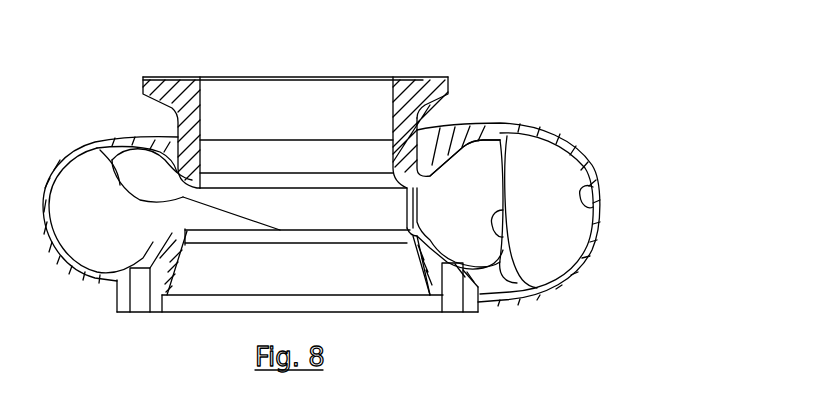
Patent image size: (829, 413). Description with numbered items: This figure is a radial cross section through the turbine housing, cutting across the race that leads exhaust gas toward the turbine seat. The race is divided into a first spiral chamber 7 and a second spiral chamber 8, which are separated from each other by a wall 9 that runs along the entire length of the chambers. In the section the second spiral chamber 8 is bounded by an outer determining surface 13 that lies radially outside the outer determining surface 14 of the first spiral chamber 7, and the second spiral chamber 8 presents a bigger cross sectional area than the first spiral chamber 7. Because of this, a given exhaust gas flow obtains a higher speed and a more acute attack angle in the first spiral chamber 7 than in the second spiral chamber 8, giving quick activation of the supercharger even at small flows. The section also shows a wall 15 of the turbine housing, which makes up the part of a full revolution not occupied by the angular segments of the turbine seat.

The first spiral chamber 7 is at (477, 173).
The second spiral chamber 8 is at (560, 167).
The wall 9 is at (150, 194).
The outer determining surface of the second spiral chamber 13 is at (593, 185).
The outer determining surface of the first spiral chamber 14 is at (503, 237).
The wall of the turbine housing 15 is at (412, 207).